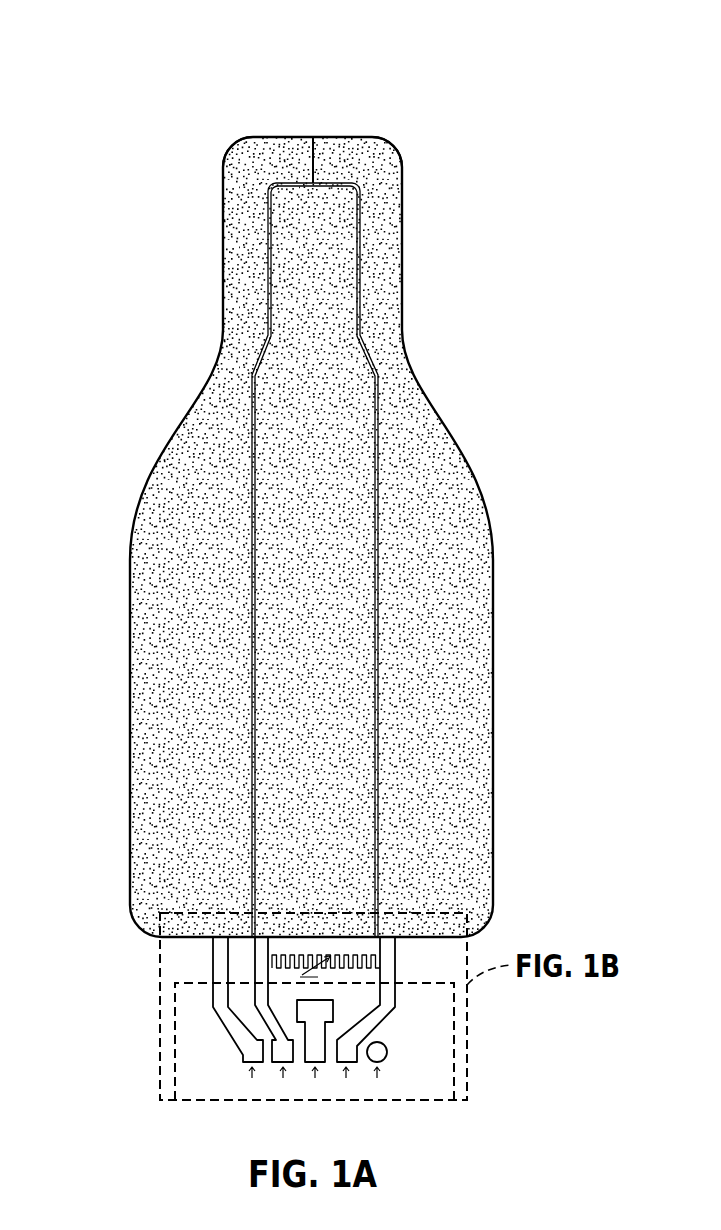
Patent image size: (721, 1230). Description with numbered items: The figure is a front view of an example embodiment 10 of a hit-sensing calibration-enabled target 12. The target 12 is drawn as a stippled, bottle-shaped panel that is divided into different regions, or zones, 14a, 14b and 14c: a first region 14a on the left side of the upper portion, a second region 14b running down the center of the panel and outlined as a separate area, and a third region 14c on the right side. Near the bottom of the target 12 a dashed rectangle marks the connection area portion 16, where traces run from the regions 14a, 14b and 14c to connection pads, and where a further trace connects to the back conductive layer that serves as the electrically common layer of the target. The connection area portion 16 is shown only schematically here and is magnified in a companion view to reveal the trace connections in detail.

The example embodiment 10 is at (306, 580).
The hit-sensing calibration-enabled target 12 is at (397, 150).
The first region (zone) of the target 14a is at (245, 198).
The second region (zone) of the target 14b is at (298, 235).
The third region (zone) of the target 14c is at (378, 198).
The connection area portion 16 is at (467, 1087).